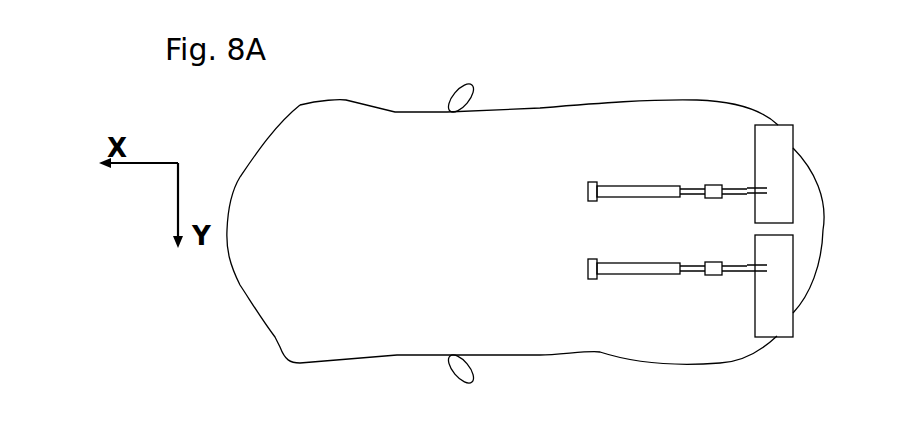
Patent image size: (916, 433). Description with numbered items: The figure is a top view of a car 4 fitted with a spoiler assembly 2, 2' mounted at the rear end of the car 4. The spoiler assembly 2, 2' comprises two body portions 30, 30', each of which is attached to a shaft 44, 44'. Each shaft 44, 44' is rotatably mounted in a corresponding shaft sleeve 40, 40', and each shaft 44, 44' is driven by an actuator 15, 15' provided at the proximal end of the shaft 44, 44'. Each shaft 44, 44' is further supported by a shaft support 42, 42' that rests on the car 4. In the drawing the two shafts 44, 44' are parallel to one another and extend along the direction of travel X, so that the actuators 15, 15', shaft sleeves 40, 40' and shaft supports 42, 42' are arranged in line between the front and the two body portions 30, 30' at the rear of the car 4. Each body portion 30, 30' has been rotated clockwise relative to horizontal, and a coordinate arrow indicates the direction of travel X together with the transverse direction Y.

The car 4 is at (349, 84).
The spoiler assembly 2 is at (732, 321).
The spoiler assembly 2' is at (733, 134).
The body portion 30 is at (830, 286).
The body portion 30' is at (834, 161).
The actuator 15 is at (577, 333).
The actuator 15' is at (575, 131).
The shaft sleeve 40 is at (638, 335).
The shaft sleeve 40' is at (638, 130).
The shaft support 42 is at (717, 334).
The shaft support 42' is at (723, 133).
The shaft 44 is at (713, 336).
The shaft 44' is at (709, 120).